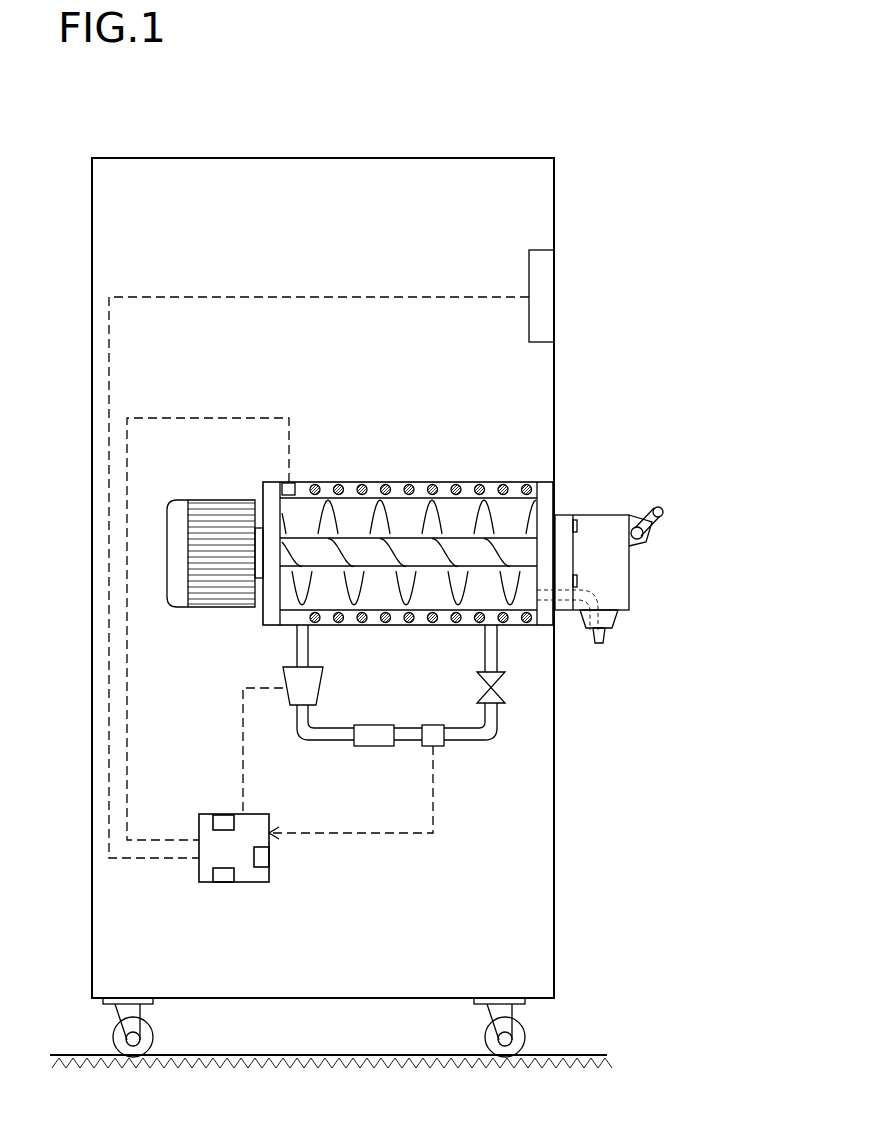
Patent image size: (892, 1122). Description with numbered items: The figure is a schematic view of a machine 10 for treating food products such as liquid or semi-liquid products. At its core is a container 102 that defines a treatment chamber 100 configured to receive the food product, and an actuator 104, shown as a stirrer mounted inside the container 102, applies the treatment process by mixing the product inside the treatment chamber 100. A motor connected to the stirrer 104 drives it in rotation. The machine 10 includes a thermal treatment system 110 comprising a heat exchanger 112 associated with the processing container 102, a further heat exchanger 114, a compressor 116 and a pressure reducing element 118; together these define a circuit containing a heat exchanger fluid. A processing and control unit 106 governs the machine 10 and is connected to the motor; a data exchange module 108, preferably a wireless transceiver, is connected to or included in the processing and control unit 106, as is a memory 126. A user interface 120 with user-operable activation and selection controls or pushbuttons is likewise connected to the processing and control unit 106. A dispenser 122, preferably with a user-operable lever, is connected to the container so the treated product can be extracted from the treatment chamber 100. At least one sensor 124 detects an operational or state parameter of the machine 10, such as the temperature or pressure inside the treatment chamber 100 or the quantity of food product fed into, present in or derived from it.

The machine 10 is at (610, 165).
The treatment chamber 100 is at (399, 524).
The container 102 is at (584, 474).
The actuator 104 is at (508, 548).
The processing and control unit 106 is at (257, 892).
The data exchange module 108 is at (262, 858).
The thermal treatment system 110 is at (469, 760).
The heat exchanger 112 is at (478, 484).
The further heat exchanger 114 is at (375, 746).
The compressor 116 is at (297, 676).
The pressure reducing element 118 is at (493, 694).
The user interface 120 is at (545, 280).
The dispenser 122 is at (616, 570).
The sensor 124 is at (293, 480).
The memory 126 is at (222, 882).